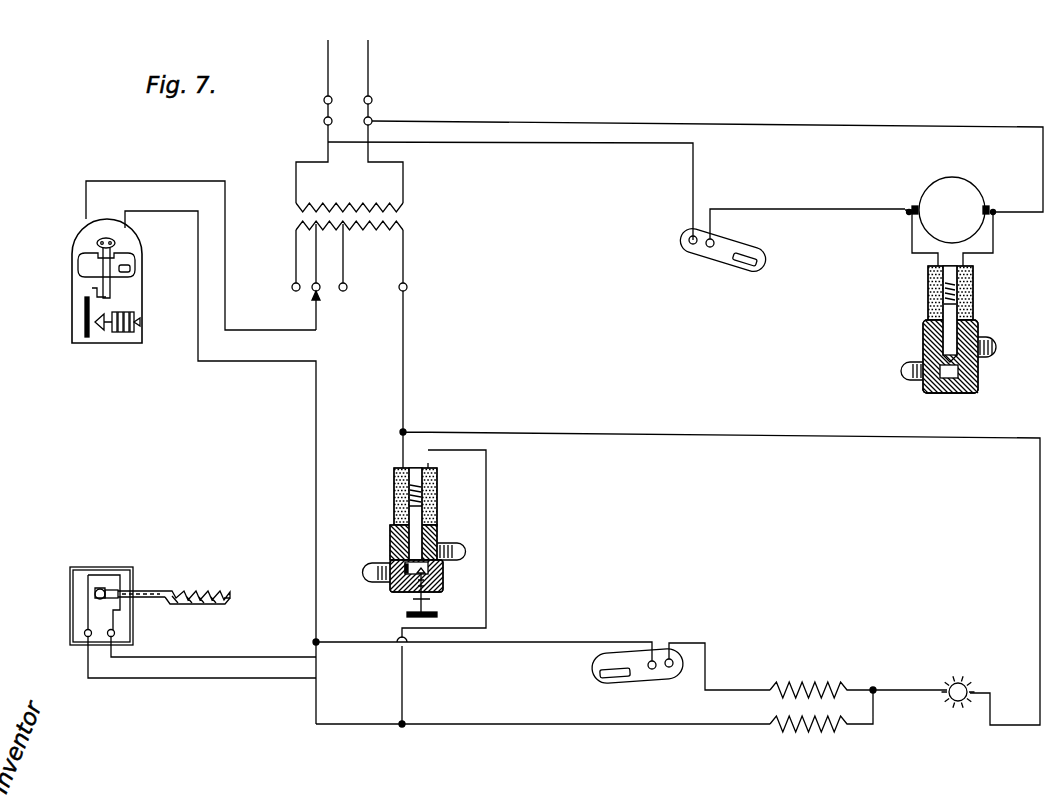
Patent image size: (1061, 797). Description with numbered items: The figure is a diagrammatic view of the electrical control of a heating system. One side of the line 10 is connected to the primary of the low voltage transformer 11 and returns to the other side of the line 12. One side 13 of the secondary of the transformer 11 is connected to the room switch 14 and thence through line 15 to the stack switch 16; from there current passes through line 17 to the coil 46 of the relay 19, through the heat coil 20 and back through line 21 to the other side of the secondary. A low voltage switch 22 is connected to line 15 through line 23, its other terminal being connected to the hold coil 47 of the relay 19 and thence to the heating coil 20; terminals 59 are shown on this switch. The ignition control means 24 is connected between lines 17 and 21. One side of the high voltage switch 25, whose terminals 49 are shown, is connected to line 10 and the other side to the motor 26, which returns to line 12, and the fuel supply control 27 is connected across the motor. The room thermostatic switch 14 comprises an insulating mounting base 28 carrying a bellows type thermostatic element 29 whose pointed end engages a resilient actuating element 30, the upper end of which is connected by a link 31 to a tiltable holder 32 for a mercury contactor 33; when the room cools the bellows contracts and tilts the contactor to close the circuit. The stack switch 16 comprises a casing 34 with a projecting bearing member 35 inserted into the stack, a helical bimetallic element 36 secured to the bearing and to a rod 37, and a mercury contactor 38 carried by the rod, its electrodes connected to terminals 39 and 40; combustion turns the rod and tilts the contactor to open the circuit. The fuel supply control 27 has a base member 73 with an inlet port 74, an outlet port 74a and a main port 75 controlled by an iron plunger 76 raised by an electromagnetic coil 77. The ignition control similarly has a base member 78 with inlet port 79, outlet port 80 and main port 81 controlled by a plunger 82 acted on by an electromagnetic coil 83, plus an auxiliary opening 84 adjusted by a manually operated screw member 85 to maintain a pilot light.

The line 10 is at (325, 134).
The low voltage transformer 11 is at (415, 206).
The line 12 is at (372, 128).
The one side of the secondary 13 is at (226, 245).
The room thermostatic switch 14 is at (147, 284).
The line 15 is at (280, 378).
The stack switch 16 is at (144, 570).
The line 17 is at (213, 686).
The relay 19 is at (868, 674).
The heat coil 20 is at (967, 671).
The line 21 is at (762, 432).
The low voltage switch 22 is at (612, 650).
The line 23 is at (545, 641).
The ignition control means 24 is at (439, 587).
The high voltage switch 25 is at (778, 256).
The motor 26 is at (975, 186).
The fuel supply control 27 is at (940, 330).
The mounting base 28 is at (133, 248).
The bellows type thermostatic element 29 is at (130, 340).
The resilient actuating element 30 is at (84, 315).
The link 31 is at (90, 293).
The tiltable holder 32 is at (112, 287).
The mercury contactor 33 is at (82, 262).
The casing 34 is at (99, 575).
The bearing member 35 is at (160, 590).
The helical bimetallic element 36 is at (214, 590).
The rod 37 is at (212, 604).
The mercury contactor 38 is at (95, 594).
The terminal 39 is at (82, 640).
The terminal 40 is at (118, 640).
The coil 46 is at (770, 732).
The hold coil 47 is at (772, 694).
The relay terminals 49 is at (686, 248).
The relay terminals 59 is at (592, 664).
The base member 73 is at (978, 392).
The inlet port 74 is at (985, 340).
The outlet port 74a is at (910, 372).
The main port 75 is at (928, 357).
The iron plunger 76 is at (968, 284).
The electromagnetic coil 77 is at (930, 287).
The base member 78 is at (443, 588).
The inlet port 79 is at (457, 542).
The outlet port 80 is at (372, 583).
The main port 81 is at (390, 547).
The plunger 82 is at (392, 492).
The electromagnetic coil 83 is at (438, 482).
The auxiliary opening 84 is at (430, 572).
The screw member 85 is at (438, 619).